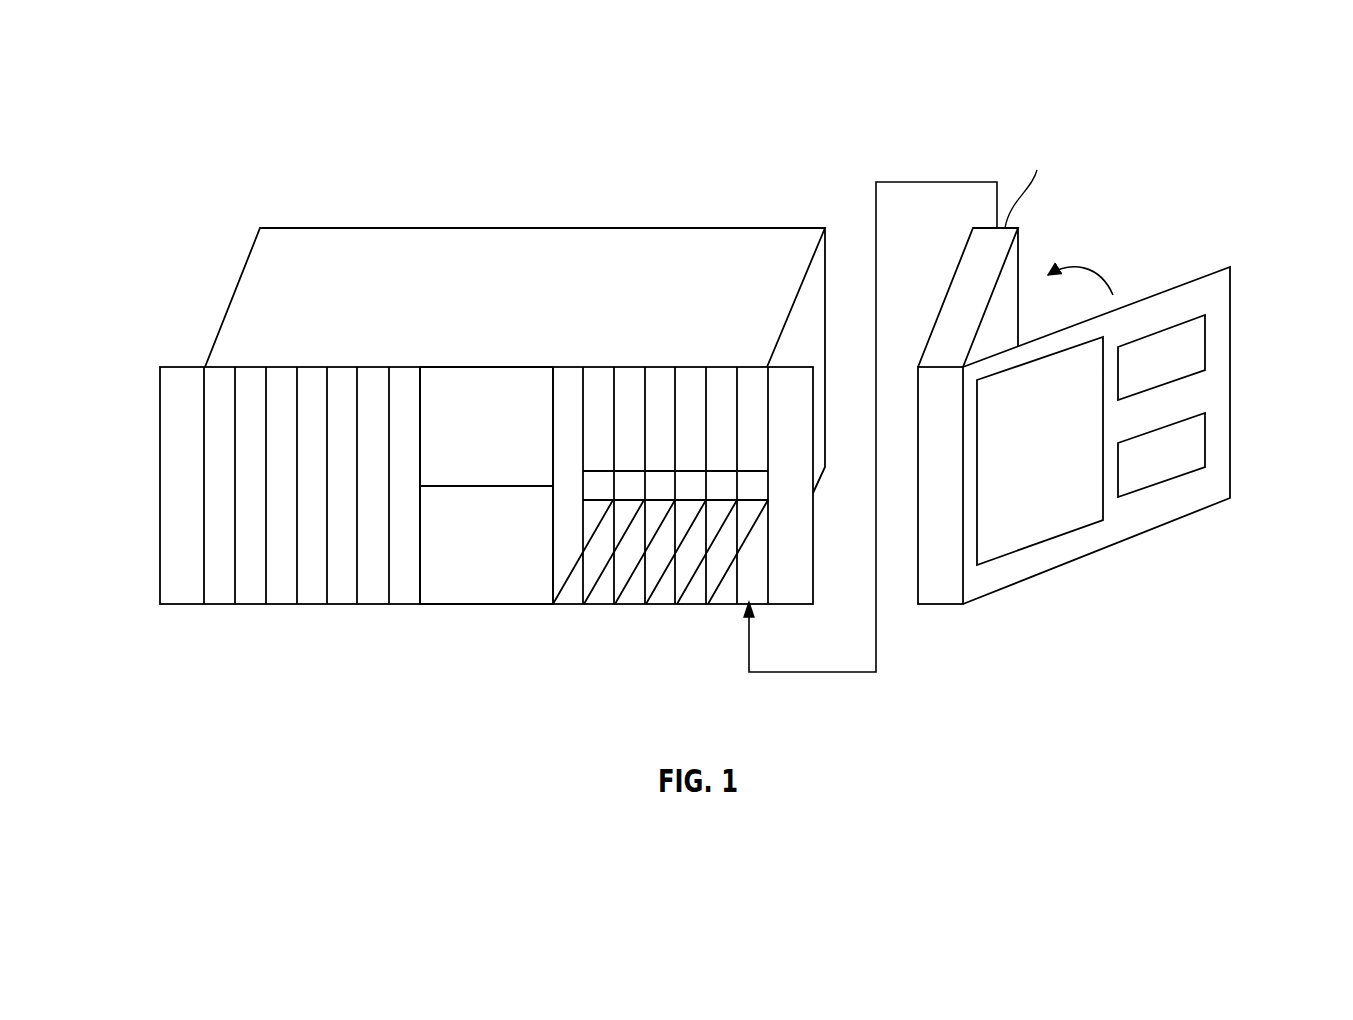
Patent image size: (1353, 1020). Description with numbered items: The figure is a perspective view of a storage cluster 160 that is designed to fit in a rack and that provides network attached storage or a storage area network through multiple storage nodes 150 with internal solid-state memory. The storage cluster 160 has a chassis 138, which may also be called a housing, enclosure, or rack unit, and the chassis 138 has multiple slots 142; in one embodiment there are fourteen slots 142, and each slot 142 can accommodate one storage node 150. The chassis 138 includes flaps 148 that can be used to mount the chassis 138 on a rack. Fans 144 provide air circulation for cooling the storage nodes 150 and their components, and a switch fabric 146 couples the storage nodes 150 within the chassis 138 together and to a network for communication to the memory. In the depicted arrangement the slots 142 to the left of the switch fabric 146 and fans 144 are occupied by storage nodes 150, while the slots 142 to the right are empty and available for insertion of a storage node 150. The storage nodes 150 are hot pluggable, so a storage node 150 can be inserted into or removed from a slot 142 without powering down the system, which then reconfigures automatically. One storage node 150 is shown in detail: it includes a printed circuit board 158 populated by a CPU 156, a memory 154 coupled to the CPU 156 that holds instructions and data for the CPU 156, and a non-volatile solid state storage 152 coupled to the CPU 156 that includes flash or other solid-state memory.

The storage cluster 160 is at (174, 115).
The chassis 138 is at (334, 228).
The flaps 148 is at (160, 486).
The storage node 150 is at (220, 604).
The switch fabric 146 is at (491, 367).
The fans 144 is at (487, 604).
The slots 142 is at (733, 604).
The printed circuit board 158 is at (1230, 292).
The non-volatile solid state storage 152 is at (1040, 543).
The memory 154 is at (1163, 327).
The CPU 156 is at (1207, 440).